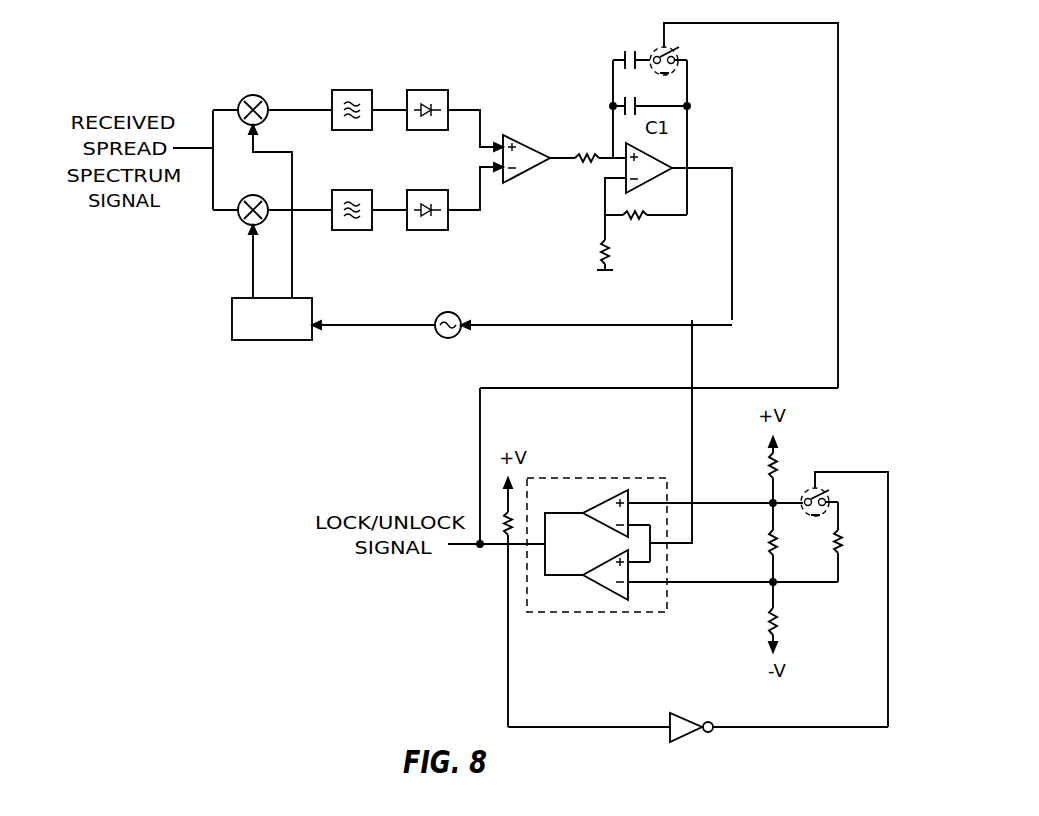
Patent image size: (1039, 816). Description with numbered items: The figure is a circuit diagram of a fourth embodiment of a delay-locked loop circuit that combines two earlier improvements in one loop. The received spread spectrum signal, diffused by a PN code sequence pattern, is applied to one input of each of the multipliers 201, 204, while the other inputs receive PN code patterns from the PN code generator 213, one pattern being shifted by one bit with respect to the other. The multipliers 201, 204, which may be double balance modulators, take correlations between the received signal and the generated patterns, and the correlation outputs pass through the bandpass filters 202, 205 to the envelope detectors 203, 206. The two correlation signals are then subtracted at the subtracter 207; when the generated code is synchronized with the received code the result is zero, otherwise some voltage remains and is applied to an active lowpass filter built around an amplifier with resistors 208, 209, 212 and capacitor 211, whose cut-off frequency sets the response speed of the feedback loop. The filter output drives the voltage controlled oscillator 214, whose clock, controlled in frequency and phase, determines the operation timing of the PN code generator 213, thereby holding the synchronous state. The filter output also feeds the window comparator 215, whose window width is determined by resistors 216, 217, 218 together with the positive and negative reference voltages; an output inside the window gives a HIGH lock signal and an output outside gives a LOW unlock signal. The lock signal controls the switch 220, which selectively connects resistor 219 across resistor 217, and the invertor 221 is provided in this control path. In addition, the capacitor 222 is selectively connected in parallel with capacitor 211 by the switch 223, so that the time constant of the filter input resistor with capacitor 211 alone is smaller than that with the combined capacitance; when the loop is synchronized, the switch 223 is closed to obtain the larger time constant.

The multiplier 201 is at (245, 97).
The bandpass filter 202 is at (338, 90).
The envelope detector 203 is at (413, 90).
The multiplier 204 is at (247, 197).
The bandpass filter 205 is at (338, 190).
The envelope detector 206 is at (413, 190).
The subtracter 207 is at (516, 138).
The resistor 208 is at (573, 181).
The resistor 209 is at (600, 262).
The capacitor 211 is at (641, 102).
The resistor 212 is at (683, 228).
The PN code generator 213 is at (258, 341).
The VCO 214 is at (443, 338).
The window comparator 215 is at (682, 534).
The resistor 216 is at (754, 473).
The resistor 217 is at (750, 556).
The resistor 218 is at (752, 624).
The resistor 219 is at (862, 580).
The switch 220 is at (828, 494).
The invertor 221 is at (690, 735).
The capacitor 222 is at (622, 58).
The switch 223 is at (677, 53).